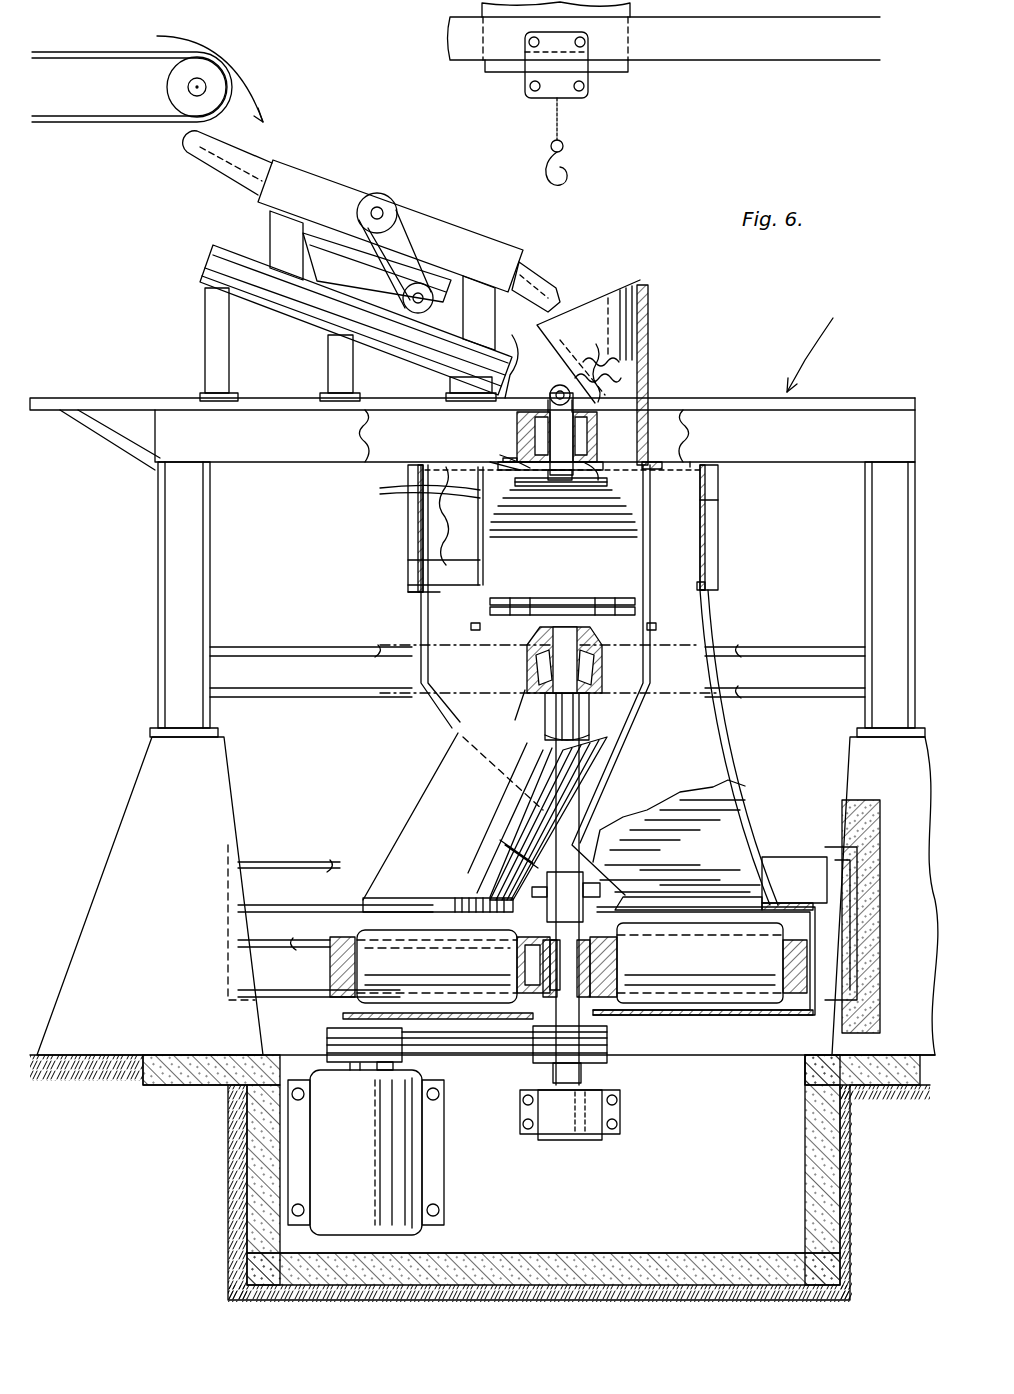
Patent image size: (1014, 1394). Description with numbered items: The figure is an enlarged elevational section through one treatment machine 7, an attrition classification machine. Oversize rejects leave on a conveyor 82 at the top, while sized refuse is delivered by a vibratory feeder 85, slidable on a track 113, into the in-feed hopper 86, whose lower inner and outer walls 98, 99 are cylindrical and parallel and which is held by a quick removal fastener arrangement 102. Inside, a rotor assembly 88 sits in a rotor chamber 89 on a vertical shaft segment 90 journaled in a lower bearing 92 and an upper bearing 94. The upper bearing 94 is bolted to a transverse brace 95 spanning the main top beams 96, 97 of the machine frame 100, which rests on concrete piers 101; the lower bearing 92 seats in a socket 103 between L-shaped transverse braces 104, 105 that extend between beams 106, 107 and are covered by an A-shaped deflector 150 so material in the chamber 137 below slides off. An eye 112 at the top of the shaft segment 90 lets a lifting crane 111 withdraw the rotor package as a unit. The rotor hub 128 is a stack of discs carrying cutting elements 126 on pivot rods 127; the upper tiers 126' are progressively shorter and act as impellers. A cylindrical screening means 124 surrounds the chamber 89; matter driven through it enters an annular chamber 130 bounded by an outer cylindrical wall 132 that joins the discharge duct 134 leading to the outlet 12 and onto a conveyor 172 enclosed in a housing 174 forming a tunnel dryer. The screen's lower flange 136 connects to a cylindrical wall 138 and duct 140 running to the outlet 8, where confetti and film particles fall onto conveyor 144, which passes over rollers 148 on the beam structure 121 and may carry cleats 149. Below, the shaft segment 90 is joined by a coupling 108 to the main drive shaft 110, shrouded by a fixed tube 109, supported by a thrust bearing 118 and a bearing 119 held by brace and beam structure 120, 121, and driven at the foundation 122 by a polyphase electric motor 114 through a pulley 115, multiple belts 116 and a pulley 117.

The treatment machine 7 is at (814, 341).
The outlet 8 is at (393, 900).
The outlet 12 is at (722, 880).
The conveyor 82 is at (95, 50).
The vibratory feeder 85 is at (432, 217).
The in-feed hopper 86 is at (650, 305).
The rotor assembly 88 is at (636, 612).
The rotor chamber 89 is at (630, 488).
The shaft segment 90 is at (500, 455).
The lower bearing 92 is at (604, 668).
The upper bearing 94 is at (517, 430).
The transverse brace 95 is at (512, 354).
The main top beam 96 is at (362, 425).
The main top beam 97 is at (250, 432).
The inner wall 98 is at (604, 373).
The outer wall 99 is at (645, 403).
The machine frame 100 is at (170, 582).
The concrete piers 101 is at (118, 888).
The quick removal fastener arrangement 102 is at (688, 458).
The socket 103 is at (515, 660).
The transverse brace 104 is at (525, 690).
The transverse brace 105 is at (595, 710).
The beam 106 is at (410, 648).
The beam 107 is at (262, 652).
The coupling 108 is at (590, 860).
The fixed tube 109 is at (590, 735).
The main drive shaft 110 is at (583, 1012).
The lifting crane 111 is at (614, 88).
The eye 112 is at (549, 400).
The track 113 is at (95, 398).
The polyphase electric motor 114 is at (362, 1155).
The pulley 115 is at (335, 1035).
The multiple belts 116 is at (470, 1030).
The pulley 117 is at (605, 1050).
The thrust bearing 118 is at (550, 1125).
The bearing 119 is at (514, 965).
The brace structure 120 is at (600, 890).
The beam structure 121 is at (305, 950).
The foundation 122 is at (262, 1170).
The cylindrical screening means 124 is at (620, 537).
The cutting elements 126 is at (427, 526).
The upper tiers of cutting elements 126' is at (404, 492).
The pivot rods 127 is at (598, 475).
The rotor hub 128 is at (590, 540).
The annular chamber 130 is at (703, 578).
The outer concentric cylindrical wall 132 is at (718, 503).
The discharge duct 134 is at (725, 745).
The lower flange 136 is at (695, 618).
The chamber 137 is at (470, 628).
The cylindrical wall 138 is at (680, 645).
The duct 140 is at (432, 772).
The conveyor 144 is at (447, 969).
The rollers 148 is at (345, 915).
The cleats 149 is at (425, 925).
The A-shaped deflector 150 is at (490, 603).
The conveyor 172 is at (700, 968).
The housing 174 is at (765, 1015).